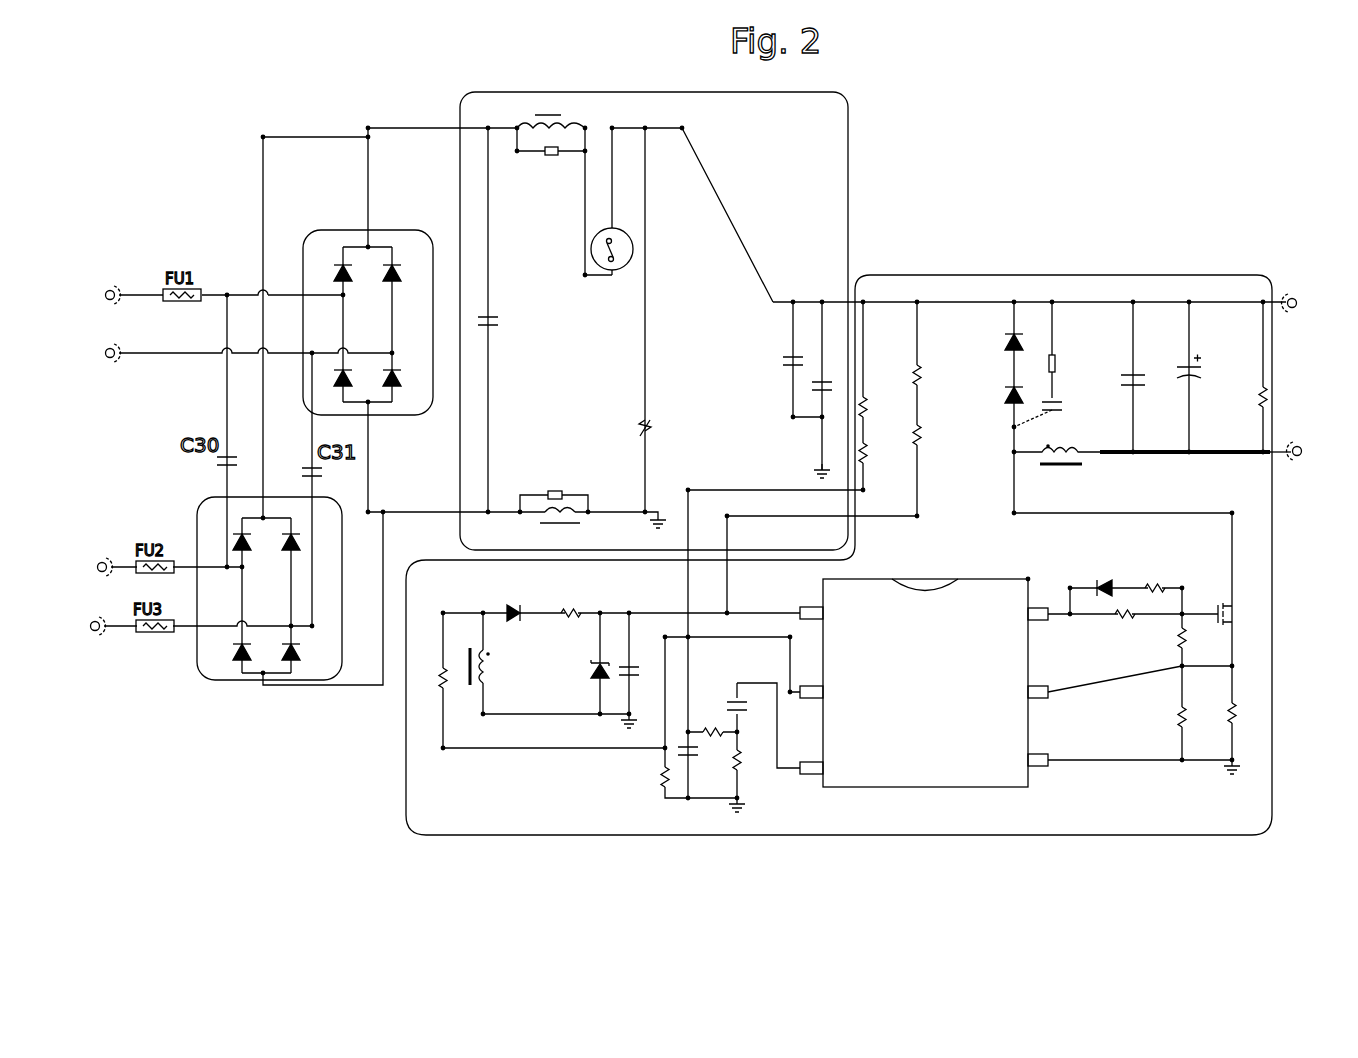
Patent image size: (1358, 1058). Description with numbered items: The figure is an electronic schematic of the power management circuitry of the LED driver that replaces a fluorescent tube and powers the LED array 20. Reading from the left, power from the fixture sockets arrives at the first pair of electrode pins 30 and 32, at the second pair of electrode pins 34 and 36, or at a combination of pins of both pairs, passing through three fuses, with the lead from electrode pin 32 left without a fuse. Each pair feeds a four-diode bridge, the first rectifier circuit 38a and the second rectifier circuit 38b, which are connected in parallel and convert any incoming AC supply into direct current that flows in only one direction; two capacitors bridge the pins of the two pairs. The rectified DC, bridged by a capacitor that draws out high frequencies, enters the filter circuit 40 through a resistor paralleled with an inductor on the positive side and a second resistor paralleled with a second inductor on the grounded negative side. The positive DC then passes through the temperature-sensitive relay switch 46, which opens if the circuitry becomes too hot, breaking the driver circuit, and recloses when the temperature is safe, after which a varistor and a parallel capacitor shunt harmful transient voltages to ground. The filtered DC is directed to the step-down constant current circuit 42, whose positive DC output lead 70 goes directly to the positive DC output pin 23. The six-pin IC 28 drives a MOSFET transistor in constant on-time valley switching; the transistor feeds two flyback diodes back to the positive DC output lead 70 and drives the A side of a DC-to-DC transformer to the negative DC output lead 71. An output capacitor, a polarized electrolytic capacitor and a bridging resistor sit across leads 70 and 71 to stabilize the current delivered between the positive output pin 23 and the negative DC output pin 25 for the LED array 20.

The LED array 20 is at (1308, 328).
The positive DC output pin 23 is at (1309, 303).
The negative DC output pin 25 is at (1312, 465).
The IC 28 is at (965, 792).
The first electrode pin 30 is at (97, 295).
The second electrode pin 32 is at (97, 353).
The third electrode pin 34 is at (88, 567).
The fourth electrode pin 36 is at (82, 626).
The first rectifier circuit 38a is at (303, 227).
The second rectifier circuit 38b is at (221, 684).
The filter circuit 40 is at (661, 321).
The step-down constant current circuit 42 is at (1148, 273).
The temperature-sensitive relay switch 46 is at (630, 224).
The positive DC output lead 70 is at (1029, 313).
The negative DC output lead 71 is at (1195, 463).